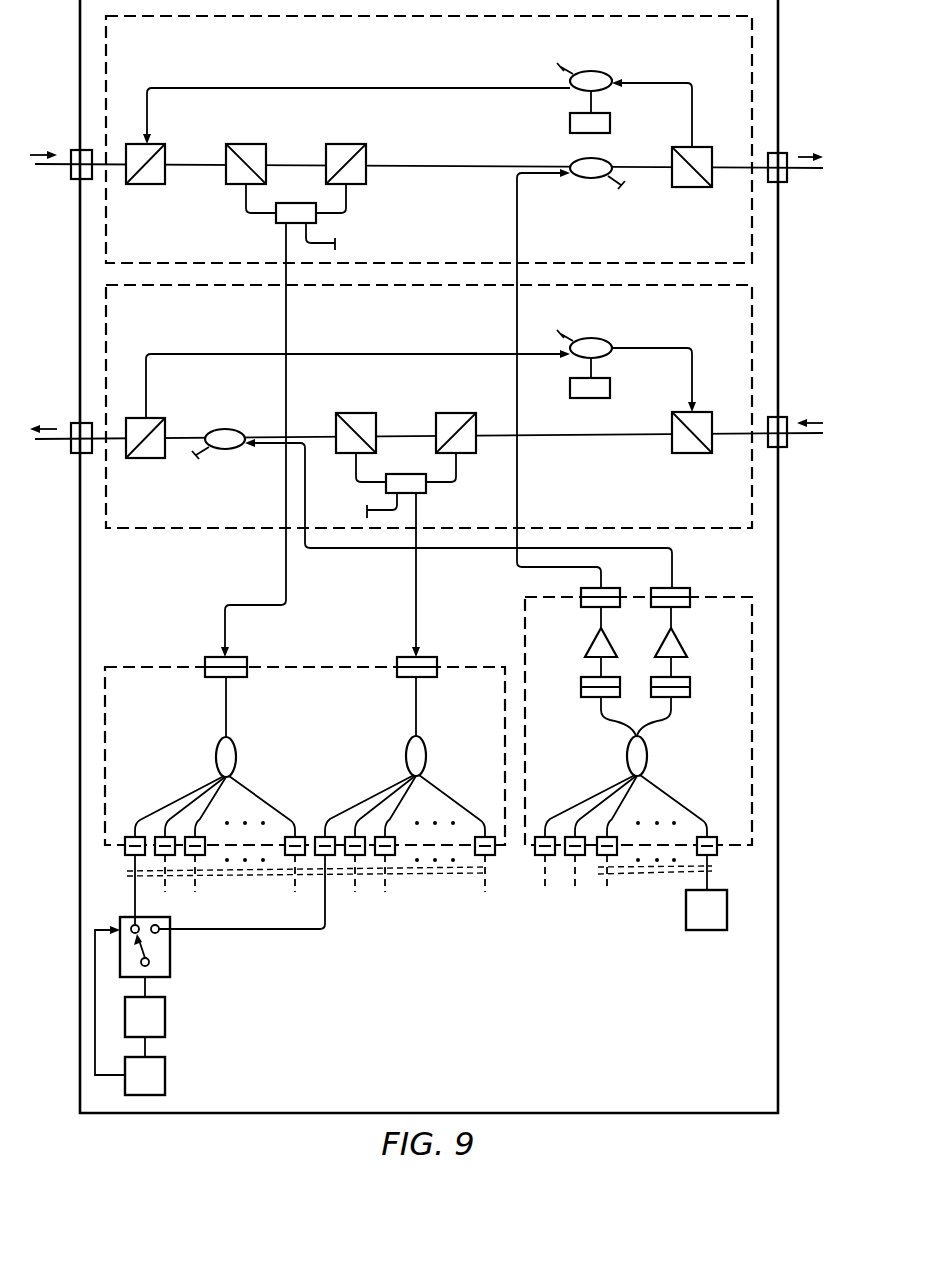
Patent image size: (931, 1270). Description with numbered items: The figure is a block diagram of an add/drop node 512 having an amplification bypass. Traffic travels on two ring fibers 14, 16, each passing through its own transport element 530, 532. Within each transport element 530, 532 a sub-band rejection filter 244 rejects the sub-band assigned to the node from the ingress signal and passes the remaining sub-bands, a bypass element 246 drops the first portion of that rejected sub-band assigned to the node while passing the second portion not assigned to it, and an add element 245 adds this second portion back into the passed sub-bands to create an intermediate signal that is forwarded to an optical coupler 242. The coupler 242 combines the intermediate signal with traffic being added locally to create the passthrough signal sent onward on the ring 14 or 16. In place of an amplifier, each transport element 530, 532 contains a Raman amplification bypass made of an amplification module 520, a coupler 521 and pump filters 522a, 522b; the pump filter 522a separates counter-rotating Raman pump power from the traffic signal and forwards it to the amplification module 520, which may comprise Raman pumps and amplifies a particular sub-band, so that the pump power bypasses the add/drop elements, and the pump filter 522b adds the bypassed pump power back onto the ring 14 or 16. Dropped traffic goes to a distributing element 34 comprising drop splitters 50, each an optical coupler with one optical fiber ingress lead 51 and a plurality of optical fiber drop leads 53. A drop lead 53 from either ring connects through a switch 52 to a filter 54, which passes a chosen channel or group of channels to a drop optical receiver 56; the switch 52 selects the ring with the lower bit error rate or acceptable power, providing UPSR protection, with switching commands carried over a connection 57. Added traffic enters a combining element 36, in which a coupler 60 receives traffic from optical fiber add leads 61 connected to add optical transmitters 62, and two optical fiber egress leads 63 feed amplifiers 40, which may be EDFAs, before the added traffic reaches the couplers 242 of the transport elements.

The fiber 14 is at (60, 168).
The fiber 16 is at (60, 446).
The distributing element 34 is at (320, 658).
The combining element 36 is at (517, 635).
The amplifier 40 is at (590, 642).
The drop splitter 50 is at (216, 757).
The optical fiber ingress lead 51 is at (226, 706).
The switch 52 is at (170, 945).
The optical fiber drop lead 53 is at (493, 871).
The filter 54 is at (165, 1017).
The drop optical receiver 56 is at (165, 1077).
The connection 57 is at (102, 926).
The coupler 60 is at (647, 757).
The optical fiber add lead 61 is at (712, 869).
The add optical transmitter 62 is at (686, 908).
The optical fiber egress lead 63 is at (601, 704).
The optical coupler 242 is at (585, 179).
The sub-band rejection filter 244 is at (247, 143).
The add element 245 is at (346, 143).
The bypass element 246 is at (276, 218).
The add/drop node 512 is at (638, 1122).
The amplification module 520 is at (570, 123).
The coupler 521 is at (586, 72).
The pump filter 522a is at (692, 188).
The pump filter 522b is at (147, 185).
The transport element 530 is at (447, 64).
The transport element 532 is at (418, 327).